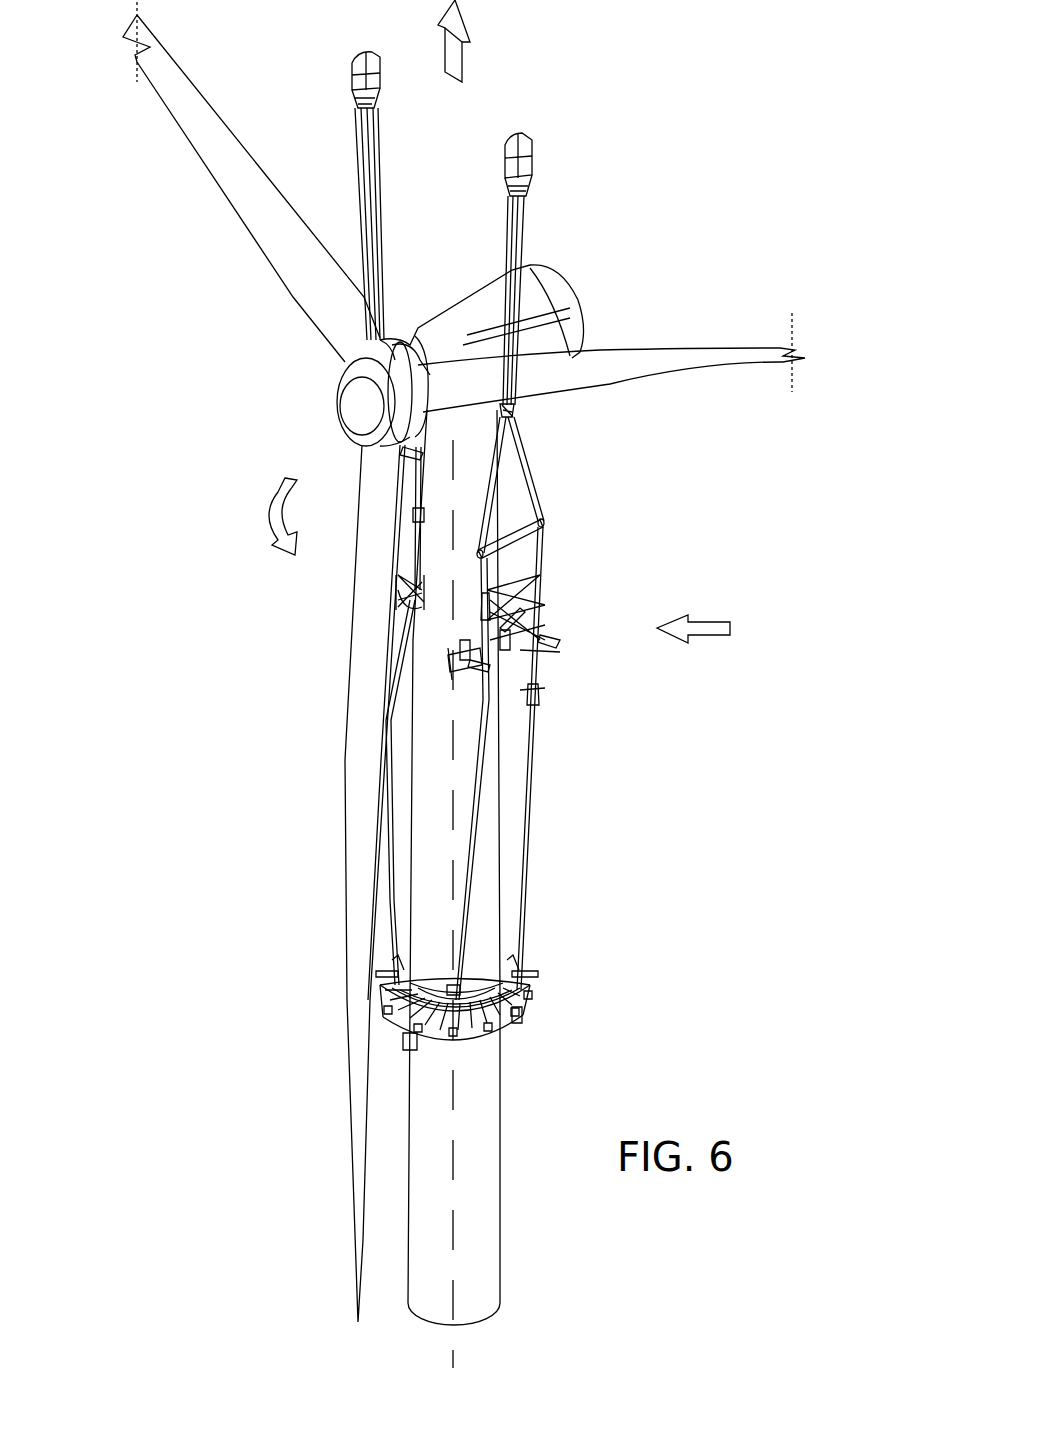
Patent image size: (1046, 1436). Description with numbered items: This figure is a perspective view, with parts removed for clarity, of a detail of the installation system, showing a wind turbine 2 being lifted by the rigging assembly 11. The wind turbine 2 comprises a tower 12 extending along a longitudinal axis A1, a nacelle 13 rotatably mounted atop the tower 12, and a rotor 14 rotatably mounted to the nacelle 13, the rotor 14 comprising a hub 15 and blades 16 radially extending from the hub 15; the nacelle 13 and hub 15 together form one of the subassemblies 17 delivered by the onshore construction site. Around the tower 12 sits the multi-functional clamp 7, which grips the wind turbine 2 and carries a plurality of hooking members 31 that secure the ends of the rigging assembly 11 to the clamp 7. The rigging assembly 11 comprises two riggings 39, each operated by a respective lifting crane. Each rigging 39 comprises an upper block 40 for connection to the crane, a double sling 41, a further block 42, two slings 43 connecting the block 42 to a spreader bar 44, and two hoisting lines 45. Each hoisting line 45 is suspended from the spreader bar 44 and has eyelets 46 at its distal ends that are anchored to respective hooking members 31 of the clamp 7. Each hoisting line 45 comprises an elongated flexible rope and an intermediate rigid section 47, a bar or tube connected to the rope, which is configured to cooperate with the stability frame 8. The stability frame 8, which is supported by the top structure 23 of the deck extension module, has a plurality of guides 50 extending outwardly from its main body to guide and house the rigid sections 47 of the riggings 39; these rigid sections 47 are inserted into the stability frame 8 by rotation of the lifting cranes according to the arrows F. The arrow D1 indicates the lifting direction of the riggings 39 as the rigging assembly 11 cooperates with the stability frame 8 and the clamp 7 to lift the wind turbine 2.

The wind turbine 2 is at (285, 830).
The multi-functional clamp 7 is at (545, 1000).
The stability frame 8 is at (575, 635).
The rigging assembly 11 is at (655, 548).
The tower 12 is at (487, 1203).
The nacelle 13 is at (540, 285).
The rotor 14 is at (218, 417).
The hub 15 is at (347, 396).
The blades 16 is at (255, 215).
The subassemblies 17 is at (427, 285).
The top structure 23 is at (520, 590).
The hooking members 31 is at (450, 990).
The riggings 39 is at (295, 100).
The upper block 40 is at (368, 56).
The double sling 41 is at (377, 158).
The further block 42 is at (515, 410).
The slings 43 is at (530, 470).
The spreader bar 44 is at (510, 558).
The hoisting lines 45 is at (480, 825).
The eyelets 46 is at (390, 970).
The intermediate rigid section 47 is at (530, 605).
The guides 50 is at (510, 690).
The lifting direction D1 is at (462, 60).
The arrows F is at (272, 510).
The longitudinal axis A1 is at (453, 1350).